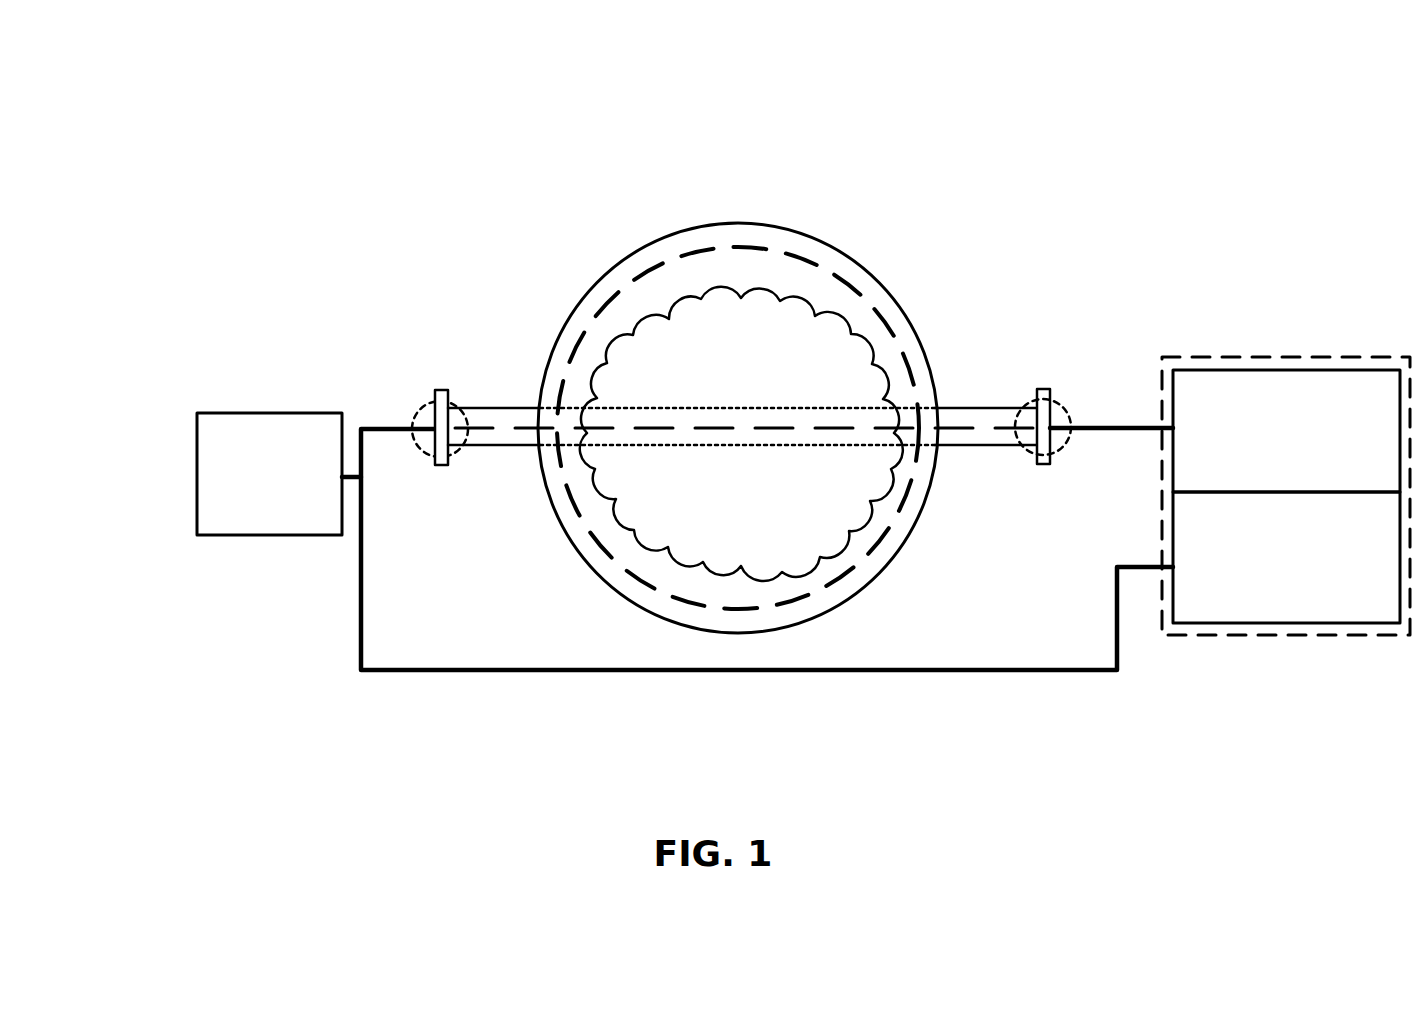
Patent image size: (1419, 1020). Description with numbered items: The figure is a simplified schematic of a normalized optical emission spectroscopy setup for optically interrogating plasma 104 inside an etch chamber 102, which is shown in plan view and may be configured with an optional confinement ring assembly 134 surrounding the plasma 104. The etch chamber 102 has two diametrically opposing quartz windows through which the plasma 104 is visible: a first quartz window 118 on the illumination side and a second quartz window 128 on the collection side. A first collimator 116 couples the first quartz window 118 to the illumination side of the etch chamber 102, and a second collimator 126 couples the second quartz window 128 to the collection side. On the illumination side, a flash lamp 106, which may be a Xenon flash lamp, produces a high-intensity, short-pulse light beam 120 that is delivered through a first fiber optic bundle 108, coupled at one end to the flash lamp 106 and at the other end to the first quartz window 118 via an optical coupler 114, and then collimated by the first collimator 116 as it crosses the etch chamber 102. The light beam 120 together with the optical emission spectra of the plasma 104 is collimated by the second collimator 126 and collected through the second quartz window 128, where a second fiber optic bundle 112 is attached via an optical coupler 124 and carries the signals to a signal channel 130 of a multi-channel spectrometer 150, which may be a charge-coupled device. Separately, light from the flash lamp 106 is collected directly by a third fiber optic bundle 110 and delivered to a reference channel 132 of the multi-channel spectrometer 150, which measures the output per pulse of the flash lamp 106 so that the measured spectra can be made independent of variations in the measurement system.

The etch chamber 102 is at (697, 227).
The plasma 104 is at (835, 322).
The flash lamp 106 is at (197, 463).
The first fiber optic bundle 108 is at (365, 428).
The third fiber optic bundle 110 is at (797, 670).
The second fiber optic bundle 112 is at (1123, 420).
The optical coupler 114 is at (415, 412).
The first collimator 116 is at (492, 446).
The first quartz window 118 is at (440, 390).
The light beam 120 is at (710, 428).
The optical coupler 124 is at (1060, 400).
The second collimator 126 is at (980, 446).
The second quartz window 128 is at (1043, 388).
The signal channel 130 is at (1330, 357).
The reference channel 132 is at (1232, 624).
The confinement ring assembly 134 is at (777, 252).
The multi-channel spectrometer 150 is at (1313, 636).